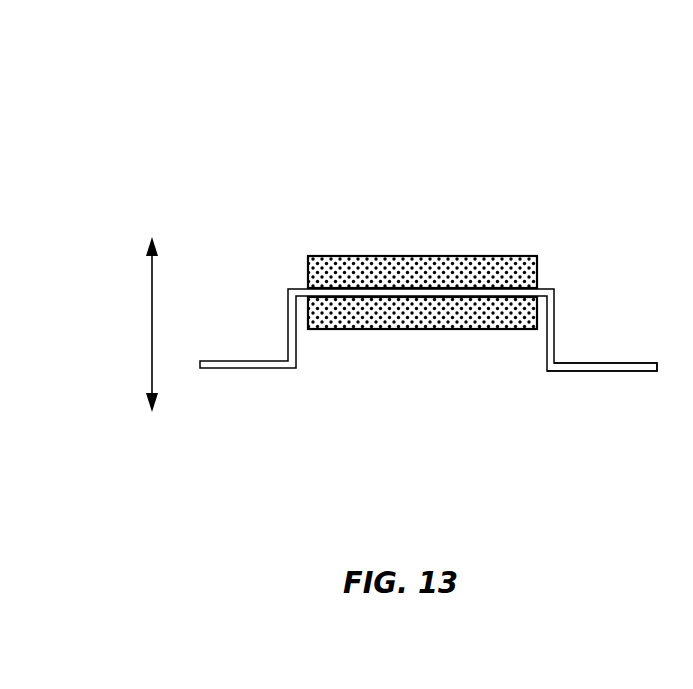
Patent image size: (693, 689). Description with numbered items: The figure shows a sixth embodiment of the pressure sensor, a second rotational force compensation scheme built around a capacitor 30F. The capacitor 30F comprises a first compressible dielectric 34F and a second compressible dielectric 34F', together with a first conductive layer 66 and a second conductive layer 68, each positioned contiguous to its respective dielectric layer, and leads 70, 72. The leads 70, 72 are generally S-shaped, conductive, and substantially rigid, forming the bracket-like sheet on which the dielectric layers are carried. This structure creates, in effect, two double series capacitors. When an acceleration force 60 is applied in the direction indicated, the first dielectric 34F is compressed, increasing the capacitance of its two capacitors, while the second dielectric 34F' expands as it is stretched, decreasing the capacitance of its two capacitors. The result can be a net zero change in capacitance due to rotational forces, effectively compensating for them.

The capacitor 30F is at (428, 246).
The first compressible dielectric 34F is at (422, 243).
The second compressible dielectric 34F' is at (421, 360).
The first conductive layer 66 is at (443, 257).
The second conductive layer 68 is at (435, 330).
The lead 70 is at (595, 372).
The lead 72 is at (257, 370).
The acceleration force 60 is at (152, 335).